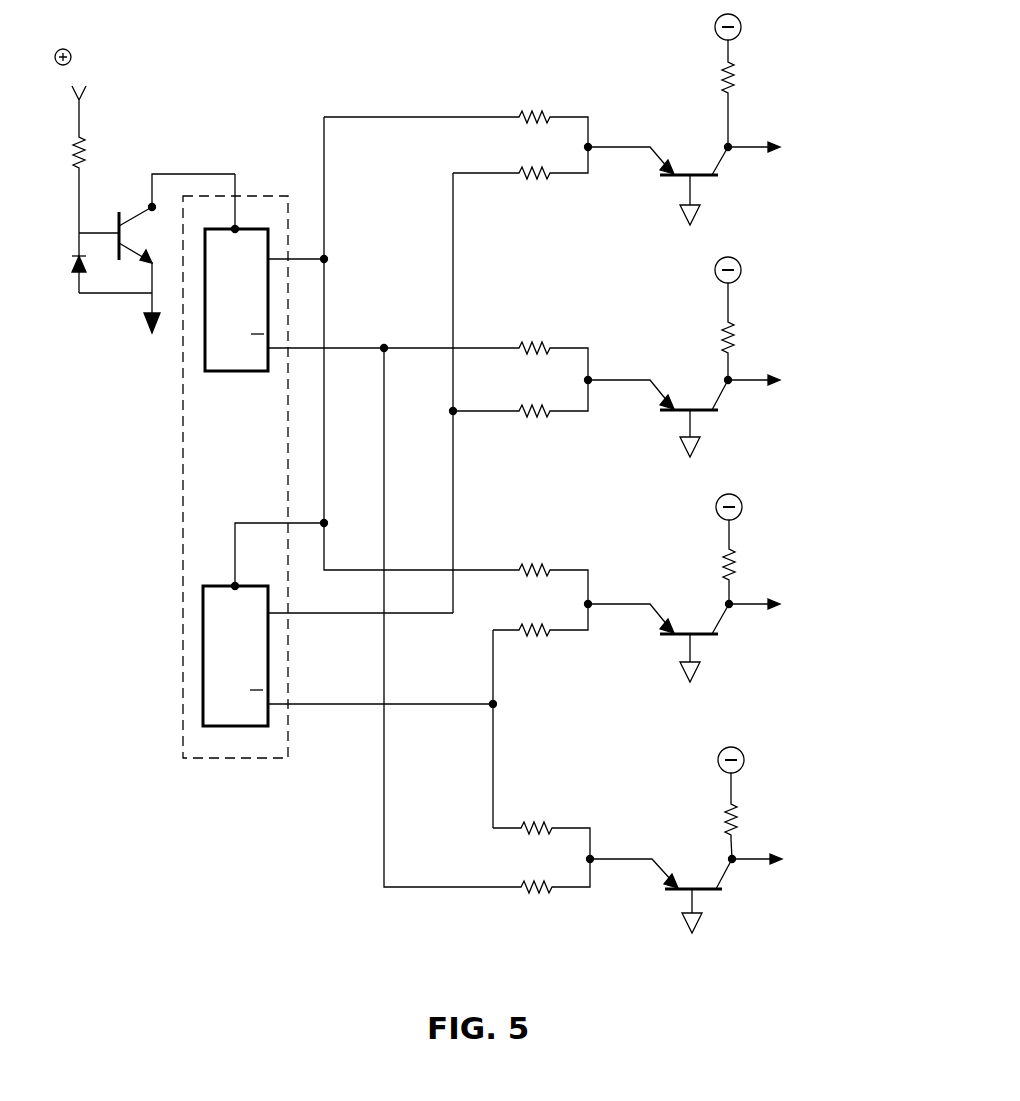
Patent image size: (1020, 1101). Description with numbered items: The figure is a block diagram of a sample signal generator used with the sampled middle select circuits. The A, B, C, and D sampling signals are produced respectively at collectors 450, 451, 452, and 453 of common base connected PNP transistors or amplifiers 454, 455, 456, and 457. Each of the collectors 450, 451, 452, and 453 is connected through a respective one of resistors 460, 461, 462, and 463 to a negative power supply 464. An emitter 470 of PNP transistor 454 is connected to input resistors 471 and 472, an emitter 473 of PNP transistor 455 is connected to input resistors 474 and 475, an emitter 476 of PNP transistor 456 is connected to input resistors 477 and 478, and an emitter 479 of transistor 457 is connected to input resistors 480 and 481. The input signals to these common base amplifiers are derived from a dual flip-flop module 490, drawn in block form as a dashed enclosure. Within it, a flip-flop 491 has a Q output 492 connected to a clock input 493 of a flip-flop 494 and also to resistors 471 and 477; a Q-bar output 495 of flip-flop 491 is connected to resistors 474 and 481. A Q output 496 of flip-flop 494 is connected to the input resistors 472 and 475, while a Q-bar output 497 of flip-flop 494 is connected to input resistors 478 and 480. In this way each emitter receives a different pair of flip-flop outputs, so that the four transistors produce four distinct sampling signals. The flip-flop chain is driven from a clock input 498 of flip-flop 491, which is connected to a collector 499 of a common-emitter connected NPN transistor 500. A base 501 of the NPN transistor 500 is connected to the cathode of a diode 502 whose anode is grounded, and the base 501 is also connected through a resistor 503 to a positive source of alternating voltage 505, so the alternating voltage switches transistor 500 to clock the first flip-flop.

The collector 450 is at (729, 146).
The collector 451 is at (729, 380).
The collector 452 is at (730, 604).
The collector 453 is at (733, 859).
The PNP transistor 454 is at (706, 154).
The PNP transistor 455 is at (706, 386).
The PNP transistor 456 is at (704, 611).
The PNP transistor 457 is at (706, 866).
The resistor 460 is at (732, 78).
The resistor 461 is at (732, 332).
The resistor 462 is at (733, 557).
The resistor 463 is at (735, 812).
The negative power supply 464 is at (740, 20).
The emitter 470 is at (590, 147).
The input resistor 471 is at (548, 116).
The input resistor 472 is at (548, 173).
The emitter 473 is at (590, 380).
The input resistor 474 is at (520, 347).
The input resistor 475 is at (548, 411).
The emitter 476 is at (590, 604).
The input resistor 477 is at (546, 569).
The input resistor 478 is at (548, 630).
The emitter 479 is at (592, 859).
The input resistor 480 is at (558, 803).
The input resistor 481 is at (550, 887).
The dual flip-flop module 490 is at (306, 200).
The flip-flop 491 is at (240, 228).
The Q output 492 is at (276, 262).
The clock input 493 is at (235, 585).
The flip-flop 494 is at (243, 585).
The Q-bar output 495 is at (272, 348).
The Q output 496 is at (272, 614).
The Q-bar output 497 is at (272, 704).
The clock input 498 is at (236, 187).
The collector 499 is at (150, 205).
The NPN transistor 500 is at (177, 243).
The base 501 is at (84, 232).
The diode 502 is at (75, 272).
The resistor 503 is at (72, 155).
The positive source of alternating voltage 505 is at (84, 92).